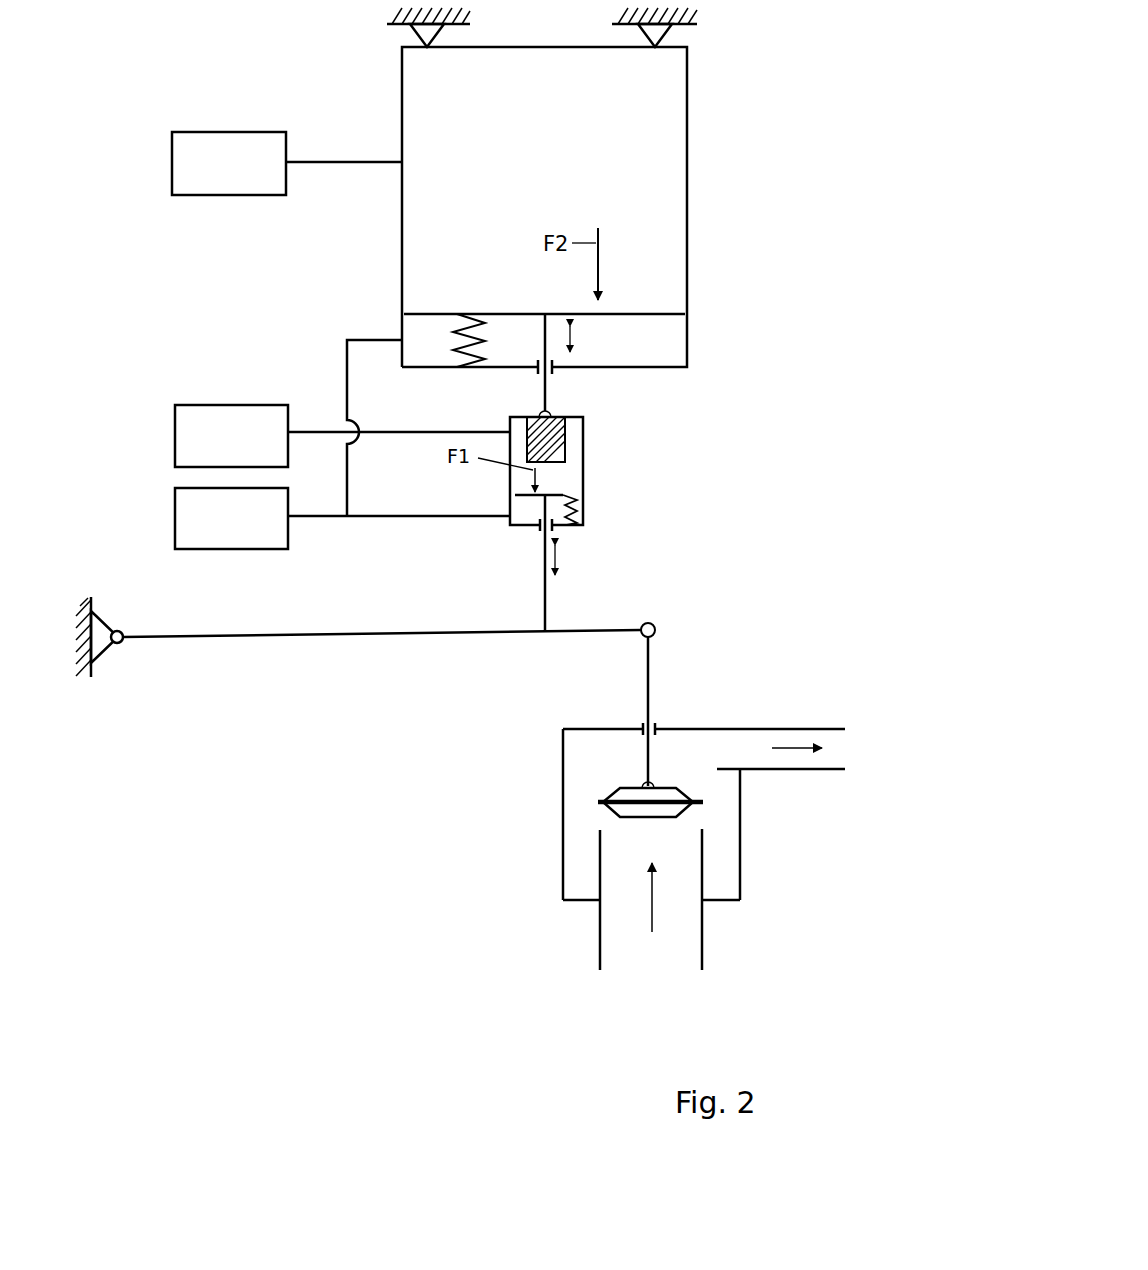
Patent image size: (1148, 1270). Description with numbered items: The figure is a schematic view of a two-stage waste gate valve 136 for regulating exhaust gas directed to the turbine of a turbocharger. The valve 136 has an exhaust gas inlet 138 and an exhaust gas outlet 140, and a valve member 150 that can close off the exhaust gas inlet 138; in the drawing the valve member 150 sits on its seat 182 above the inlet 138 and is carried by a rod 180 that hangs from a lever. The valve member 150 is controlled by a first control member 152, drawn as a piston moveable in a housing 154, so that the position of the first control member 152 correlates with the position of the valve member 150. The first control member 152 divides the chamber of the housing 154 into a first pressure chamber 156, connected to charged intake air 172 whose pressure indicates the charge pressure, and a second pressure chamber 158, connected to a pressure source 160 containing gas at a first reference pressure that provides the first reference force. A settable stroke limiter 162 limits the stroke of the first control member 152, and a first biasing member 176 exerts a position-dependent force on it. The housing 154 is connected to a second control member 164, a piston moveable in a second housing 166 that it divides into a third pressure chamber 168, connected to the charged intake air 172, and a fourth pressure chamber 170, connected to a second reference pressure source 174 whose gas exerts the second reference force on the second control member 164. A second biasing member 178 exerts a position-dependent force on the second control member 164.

The valve 136 is at (712, 71).
The second housing 166 is at (687, 142).
The fourth pressure chamber 170 is at (655, 195).
The second control member 164 is at (647, 311).
The third pressure chamber 168 is at (656, 338).
The second biasing member 178 is at (462, 343).
The second reference pressure source 174 is at (200, 132).
The pressure source 160 is at (200, 405).
The charged intake air 172 is at (205, 549).
The housing 154 is at (583, 424).
The stroke limiter 162 is at (554, 450).
The first control member 152 is at (563, 495).
The second pressure chamber 158 is at (518, 484).
The first pressure chamber 156 is at (525, 517).
The first biasing member 176 is at (572, 508).
The valve rod 180 is at (655, 661).
The exhaust gas outlet 140 is at (848, 742).
The valve member 150 is at (620, 792).
The valve seat 182 is at (600, 828).
The exhaust gas inlet 138 is at (621, 970).